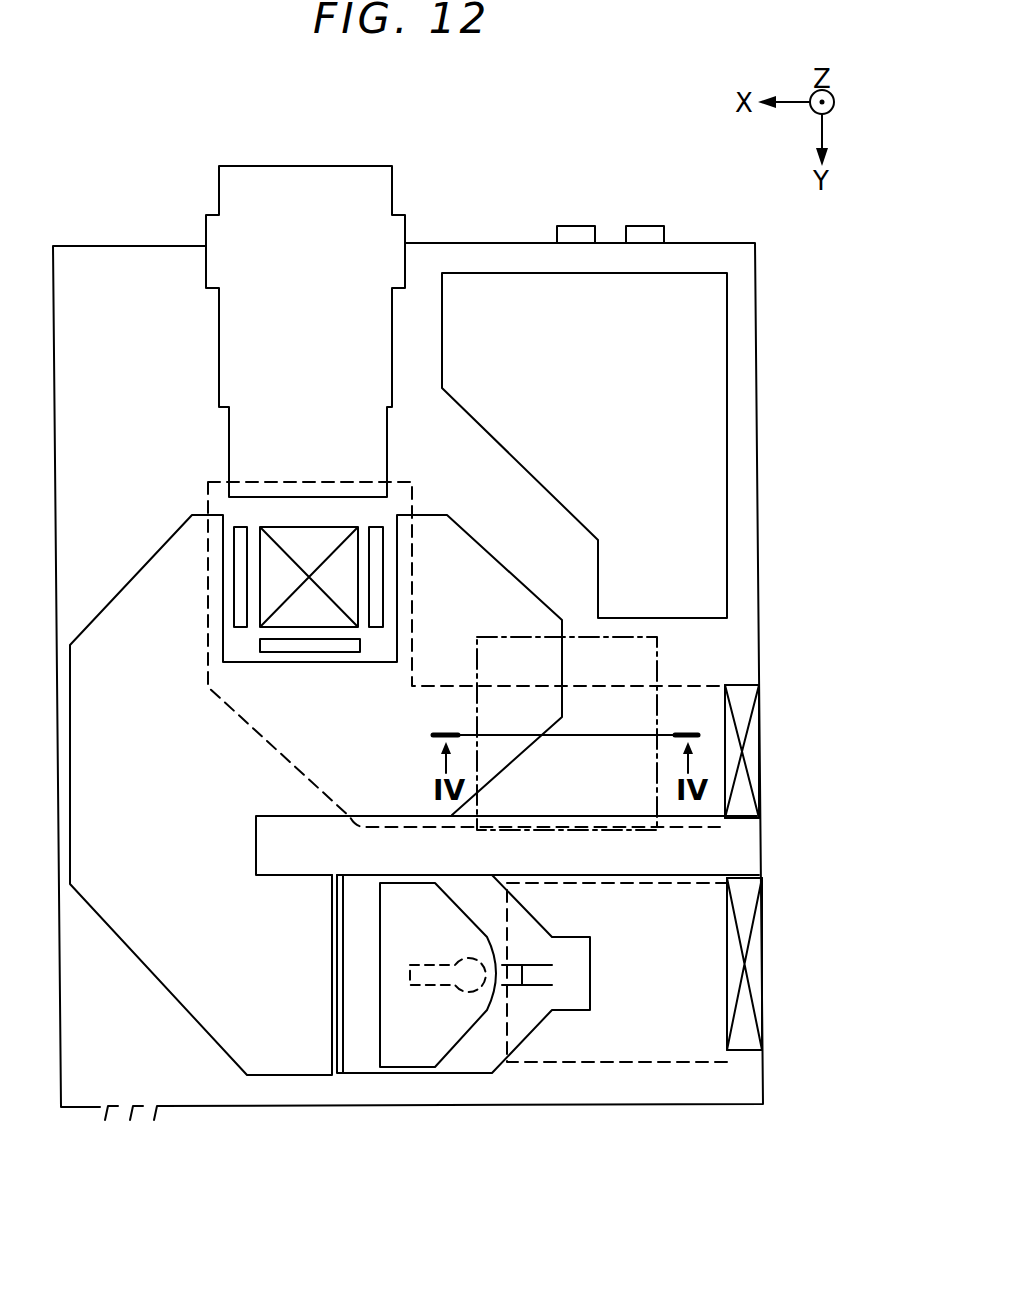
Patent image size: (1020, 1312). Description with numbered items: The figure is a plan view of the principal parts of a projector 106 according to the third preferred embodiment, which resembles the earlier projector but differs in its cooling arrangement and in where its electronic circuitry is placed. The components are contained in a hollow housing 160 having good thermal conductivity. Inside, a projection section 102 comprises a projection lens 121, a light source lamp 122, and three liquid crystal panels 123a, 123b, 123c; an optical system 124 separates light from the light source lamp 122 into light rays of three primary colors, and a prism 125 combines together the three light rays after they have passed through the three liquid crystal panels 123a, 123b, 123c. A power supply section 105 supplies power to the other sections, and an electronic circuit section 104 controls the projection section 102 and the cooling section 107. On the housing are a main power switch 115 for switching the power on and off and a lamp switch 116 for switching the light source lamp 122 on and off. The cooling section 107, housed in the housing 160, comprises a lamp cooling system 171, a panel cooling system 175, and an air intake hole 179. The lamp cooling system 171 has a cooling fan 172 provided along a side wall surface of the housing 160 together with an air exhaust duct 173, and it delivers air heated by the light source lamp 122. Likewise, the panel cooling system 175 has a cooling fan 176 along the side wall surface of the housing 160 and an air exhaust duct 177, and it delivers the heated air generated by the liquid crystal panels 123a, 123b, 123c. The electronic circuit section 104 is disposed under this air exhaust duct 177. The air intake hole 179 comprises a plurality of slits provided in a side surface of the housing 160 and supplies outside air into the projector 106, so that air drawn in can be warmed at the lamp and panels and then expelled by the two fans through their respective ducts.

The projector 106 is at (161, 114).
The projection section 102 is at (169, 382).
The hollow housing 160 is at (130, 246).
The projection lens 121 is at (305, 165).
The lamp switch 116 is at (577, 226).
The main power switch 115 is at (648, 226).
The power supply section 105 is at (717, 446).
The prism 125 is at (295, 533).
The liquid crystal panel 123a is at (240, 607).
The liquid crystal panel 123b is at (308, 650).
The liquid crystal panel 123c is at (378, 588).
The optical system 124 is at (158, 980).
The air exhaust duct 177 is at (252, 723).
The electronic circuit section 104 is at (657, 657).
The cooling section 107 is at (800, 753).
The panel cooling system 175 is at (786, 761).
The cooling fan 176 is at (758, 790).
The lamp cooling system 171 is at (806, 976).
The cooling fan 172 is at (745, 1052).
The air exhaust duct 173 is at (627, 1062).
The light source lamp 122 is at (410, 1075).
The air intake hole 179 is at (122, 1133).